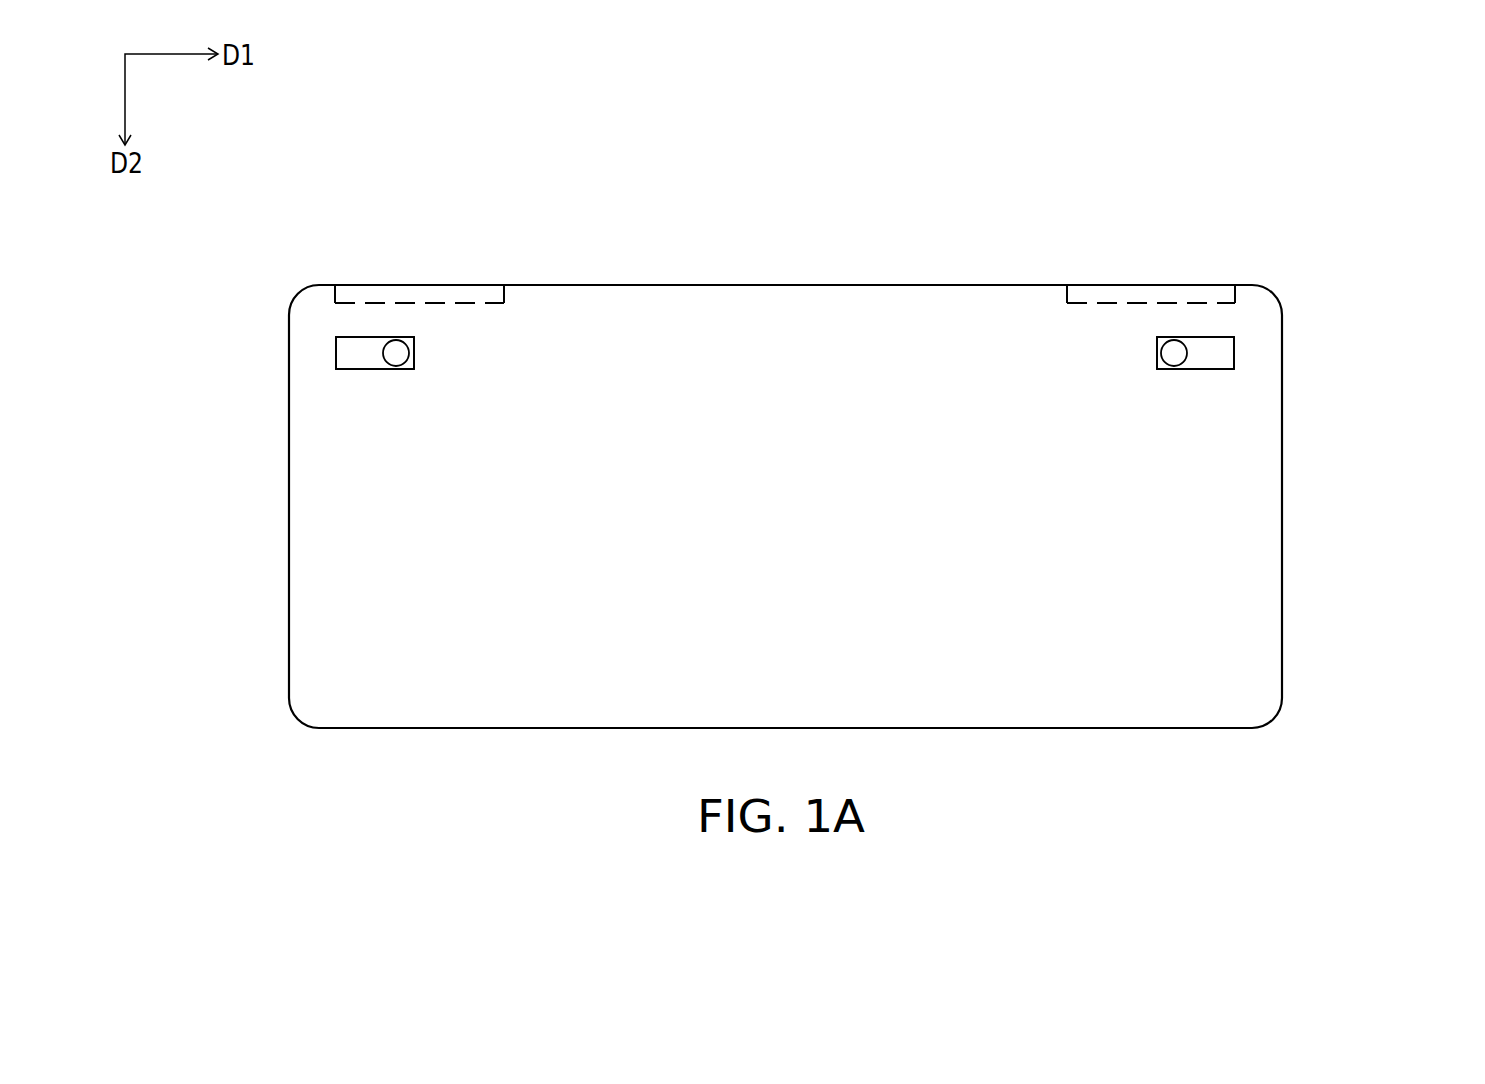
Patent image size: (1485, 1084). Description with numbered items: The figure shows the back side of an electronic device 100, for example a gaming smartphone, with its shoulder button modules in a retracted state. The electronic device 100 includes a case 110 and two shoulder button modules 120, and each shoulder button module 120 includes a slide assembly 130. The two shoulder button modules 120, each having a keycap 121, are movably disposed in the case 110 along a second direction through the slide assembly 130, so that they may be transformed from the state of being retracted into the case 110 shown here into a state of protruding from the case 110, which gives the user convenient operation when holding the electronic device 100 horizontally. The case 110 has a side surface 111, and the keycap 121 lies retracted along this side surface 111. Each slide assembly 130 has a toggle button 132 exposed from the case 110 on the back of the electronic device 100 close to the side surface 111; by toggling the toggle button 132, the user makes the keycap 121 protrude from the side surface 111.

The electronic device 100 is at (160, 709).
The case 110 is at (1229, 594).
The side surface 111 is at (688, 286).
The shoulder button module 120 is at (785, 294).
The keycap 121 is at (422, 295).
The slide assembly 130 is at (785, 353).
The toggle button 132 is at (363, 353).